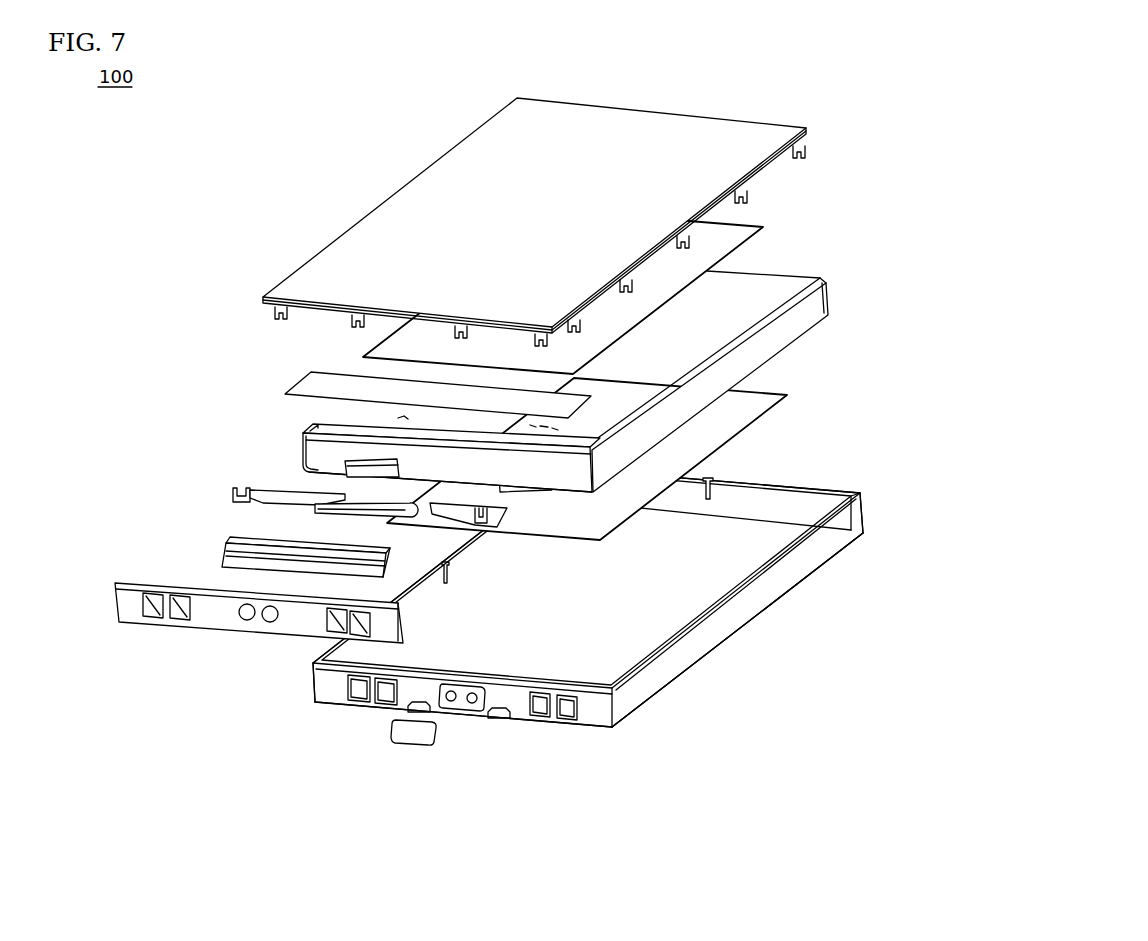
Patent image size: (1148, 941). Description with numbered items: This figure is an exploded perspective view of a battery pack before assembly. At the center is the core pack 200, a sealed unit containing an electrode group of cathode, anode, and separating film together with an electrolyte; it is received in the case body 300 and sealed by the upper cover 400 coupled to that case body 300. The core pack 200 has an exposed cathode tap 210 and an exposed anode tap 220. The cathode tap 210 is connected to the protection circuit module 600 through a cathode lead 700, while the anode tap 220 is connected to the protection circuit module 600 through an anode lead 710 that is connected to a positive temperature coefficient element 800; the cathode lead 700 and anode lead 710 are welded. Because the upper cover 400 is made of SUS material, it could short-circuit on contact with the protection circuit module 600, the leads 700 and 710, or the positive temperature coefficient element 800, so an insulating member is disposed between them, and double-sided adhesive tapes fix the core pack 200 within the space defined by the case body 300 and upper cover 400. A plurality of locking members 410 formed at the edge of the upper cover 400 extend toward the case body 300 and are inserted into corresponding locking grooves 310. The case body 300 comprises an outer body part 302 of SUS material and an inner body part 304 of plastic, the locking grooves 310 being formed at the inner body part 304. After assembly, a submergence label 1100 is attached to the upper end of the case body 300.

The upper cover 400 is at (593, 222).
The locking members 410 is at (800, 152).
The core pack 200 is at (558, 381).
The anode tap 220 is at (303, 453).
The cathode tap 210 is at (530, 480).
The anode lead 710 is at (233, 493).
The positive temperature coefficient element 800 is at (347, 517).
The cathode lead 700 is at (495, 520).
The protection circuit module 600 is at (223, 615).
The locking grooves 310 is at (738, 474).
The inner body part 304 is at (810, 502).
The outer body part 302 is at (747, 603).
The case body 300 is at (724, 675).
The submergence label 1100 is at (422, 743).